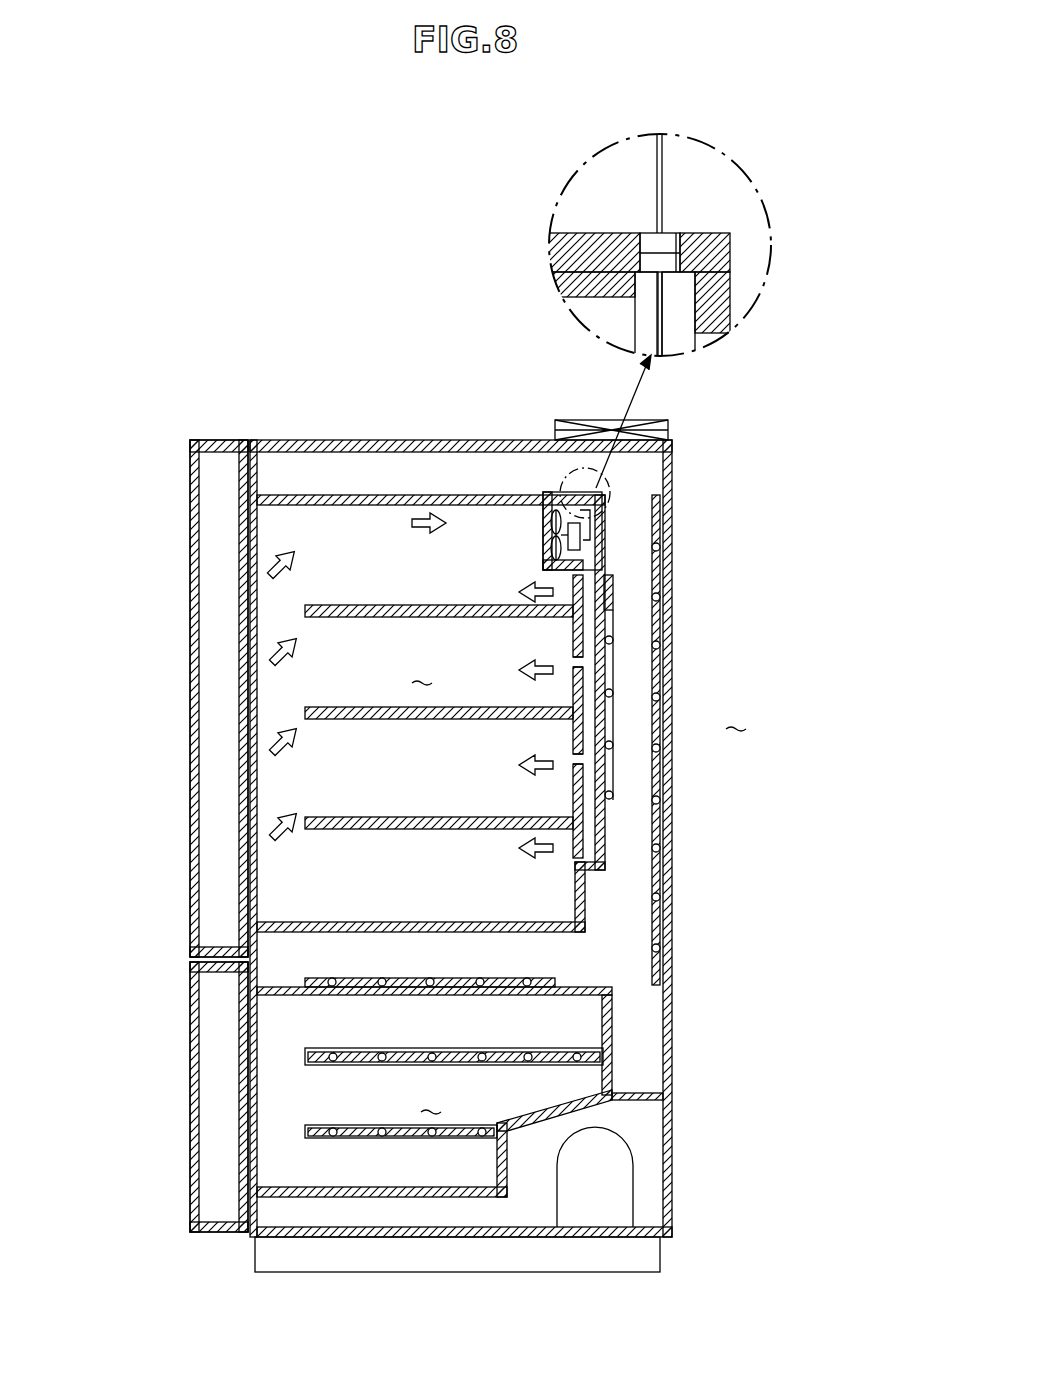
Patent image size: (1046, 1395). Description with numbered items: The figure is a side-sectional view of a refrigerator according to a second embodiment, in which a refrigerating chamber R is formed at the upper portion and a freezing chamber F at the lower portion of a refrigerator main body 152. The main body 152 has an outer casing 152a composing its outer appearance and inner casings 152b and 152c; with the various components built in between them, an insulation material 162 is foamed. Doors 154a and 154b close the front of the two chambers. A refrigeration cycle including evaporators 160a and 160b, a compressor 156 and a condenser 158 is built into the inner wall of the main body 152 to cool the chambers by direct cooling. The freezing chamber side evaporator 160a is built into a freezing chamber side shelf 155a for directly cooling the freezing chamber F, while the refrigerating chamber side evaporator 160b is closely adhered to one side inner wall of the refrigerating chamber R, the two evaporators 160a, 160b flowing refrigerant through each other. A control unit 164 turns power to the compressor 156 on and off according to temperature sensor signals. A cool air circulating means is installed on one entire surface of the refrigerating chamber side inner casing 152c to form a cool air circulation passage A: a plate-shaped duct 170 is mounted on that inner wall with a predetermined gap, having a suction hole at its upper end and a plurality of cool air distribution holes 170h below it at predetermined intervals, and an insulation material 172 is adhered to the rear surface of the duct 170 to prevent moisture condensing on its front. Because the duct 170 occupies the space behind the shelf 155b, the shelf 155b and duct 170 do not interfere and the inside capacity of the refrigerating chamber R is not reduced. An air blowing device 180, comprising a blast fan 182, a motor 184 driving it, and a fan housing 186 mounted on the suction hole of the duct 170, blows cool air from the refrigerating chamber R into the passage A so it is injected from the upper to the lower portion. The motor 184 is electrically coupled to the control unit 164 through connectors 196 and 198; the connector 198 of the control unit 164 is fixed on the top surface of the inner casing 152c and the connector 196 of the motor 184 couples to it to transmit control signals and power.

The refrigerator main body 152 is at (356, 436).
The outer casing 152a is at (672, 847).
The inner casing 152b is at (612, 1003).
The refrigerating chamber side inner casing 152c is at (590, 905).
The freezer door 154a is at (192, 1032).
The refrigerator door 154b is at (192, 650).
The freezing chamber side shelf 155a is at (305, 1058).
The shelf 155b is at (305, 712).
The compressor 156 is at (627, 1187).
The condenser 158 is at (660, 816).
The freezing chamber side evaporator 160a is at (605, 1055).
The refrigerating chamber side evaporator 160b is at (613, 760).
The insulation material 162 is at (430, 465).
The control unit 164 is at (668, 432).
The duct 170 is at (585, 598).
The cool air distribution holes 170h is at (586, 662).
The insulation material 172 is at (602, 632).
The air blowing device 180 is at (782, 497).
The blast fan 182 is at (596, 528).
The motor 184 is at (586, 545).
The fan housing 186 is at (598, 568).
The connector 196 is at (668, 262).
The connector 198 is at (665, 240).
The cool air circulation passage A is at (738, 714).
The refrigerating chamber R is at (423, 668).
The freezing chamber F is at (431, 1097).